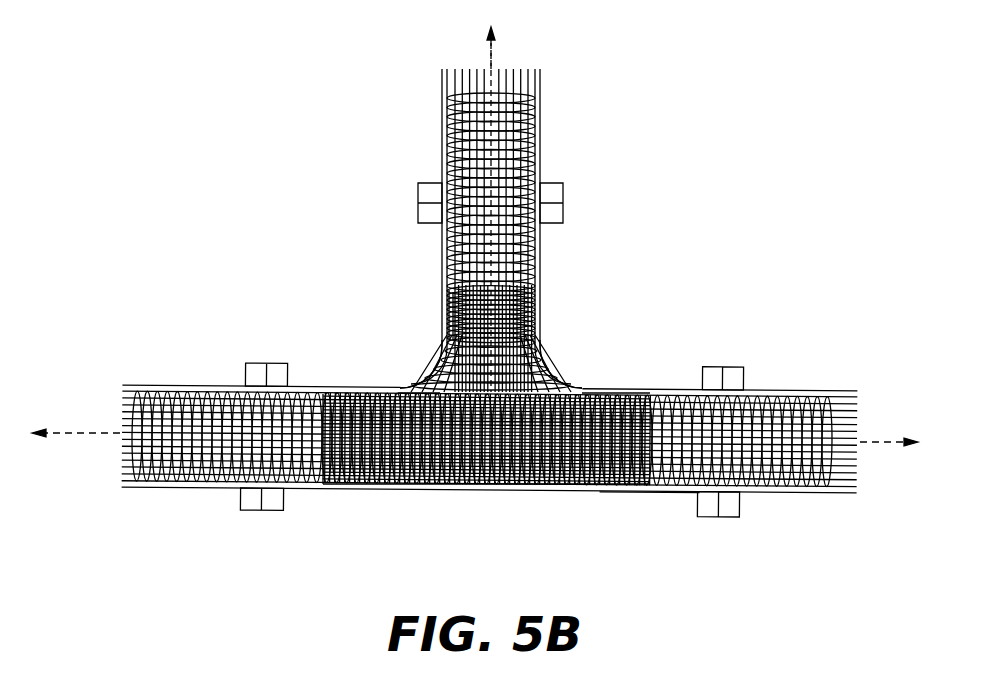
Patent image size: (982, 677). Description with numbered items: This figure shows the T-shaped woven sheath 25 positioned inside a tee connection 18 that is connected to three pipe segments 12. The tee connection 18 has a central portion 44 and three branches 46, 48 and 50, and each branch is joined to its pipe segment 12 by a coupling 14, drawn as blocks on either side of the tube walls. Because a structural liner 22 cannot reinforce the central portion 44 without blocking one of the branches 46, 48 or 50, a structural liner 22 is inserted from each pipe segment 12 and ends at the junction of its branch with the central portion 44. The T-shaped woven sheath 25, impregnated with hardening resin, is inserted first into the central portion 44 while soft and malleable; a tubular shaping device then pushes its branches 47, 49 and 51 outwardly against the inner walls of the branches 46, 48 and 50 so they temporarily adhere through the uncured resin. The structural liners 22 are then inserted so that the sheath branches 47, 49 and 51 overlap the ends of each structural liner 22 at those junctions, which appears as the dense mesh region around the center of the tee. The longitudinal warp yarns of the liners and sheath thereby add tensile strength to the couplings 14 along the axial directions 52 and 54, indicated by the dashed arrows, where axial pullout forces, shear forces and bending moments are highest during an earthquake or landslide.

The pipe segment 12 is at (442, 127).
The coupling 14 is at (418, 185).
The tee connection 18 is at (547, 370).
The structural liner 22 is at (515, 157).
The T-shaped woven sheath 25 is at (413, 477).
The central portion 44 is at (487, 490).
The branch 46 is at (540, 283).
The branch of the T-shaped woven sheath 47 is at (443, 310).
The branch 48 is at (655, 493).
The branch of the T-shaped woven sheath 49 is at (588, 397).
The branch 50 is at (352, 390).
The branch of the T-shaped woven sheath 51 is at (395, 394).
The axial direction 52 is at (890, 437).
The axial direction 54 is at (497, 52).